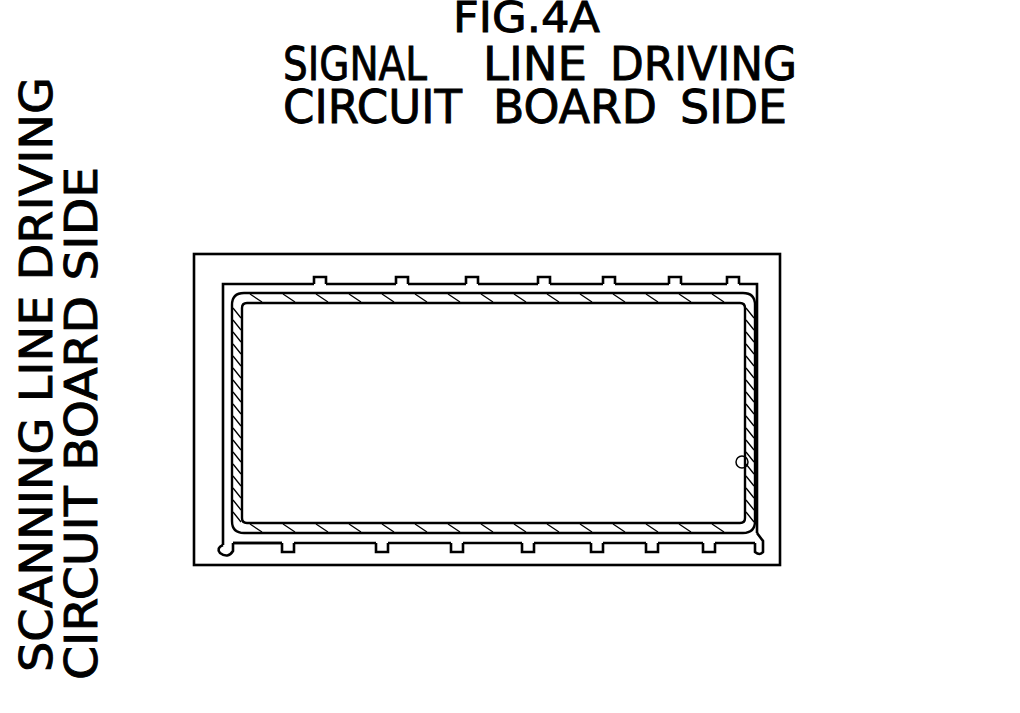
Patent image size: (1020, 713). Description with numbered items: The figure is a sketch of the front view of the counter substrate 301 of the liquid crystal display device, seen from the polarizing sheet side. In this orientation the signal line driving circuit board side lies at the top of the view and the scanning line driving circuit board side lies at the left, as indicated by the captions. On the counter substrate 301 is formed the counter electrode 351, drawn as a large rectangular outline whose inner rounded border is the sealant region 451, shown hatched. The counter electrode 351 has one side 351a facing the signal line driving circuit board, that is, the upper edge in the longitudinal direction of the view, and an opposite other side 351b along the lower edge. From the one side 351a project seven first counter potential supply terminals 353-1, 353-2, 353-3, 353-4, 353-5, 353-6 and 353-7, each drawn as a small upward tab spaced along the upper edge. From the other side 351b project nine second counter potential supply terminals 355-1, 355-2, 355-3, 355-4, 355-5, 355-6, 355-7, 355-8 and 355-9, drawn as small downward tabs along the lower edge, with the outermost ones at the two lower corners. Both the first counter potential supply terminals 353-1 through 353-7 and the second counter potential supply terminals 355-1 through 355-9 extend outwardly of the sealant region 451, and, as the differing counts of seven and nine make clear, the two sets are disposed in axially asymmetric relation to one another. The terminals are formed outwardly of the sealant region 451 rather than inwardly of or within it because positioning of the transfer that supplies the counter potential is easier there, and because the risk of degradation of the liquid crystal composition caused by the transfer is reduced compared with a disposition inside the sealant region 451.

The counter substrate 301 is at (884, 257).
The counter electrode 351 is at (732, 381).
The sealant region 451 is at (748, 466).
The one side 351a is at (260, 284).
The other side 351b is at (262, 548).
The first counter potential supply terminal 353-1 is at (327, 277).
The first counter potential supply terminal 353-2 is at (412, 277).
The first counter potential supply terminal 353-3 is at (479, 277).
The first counter potential supply terminal 353-4 is at (550, 277).
The first counter potential supply terminal 353-5 is at (615, 277).
The first counter potential supply terminal 353-6 is at (680, 277).
The first counter potential supply terminal 353-7 is at (738, 277).
The second counter potential supply terminal 355-1 is at (218, 560).
The second counter potential supply terminal 355-2 is at (288, 553).
The second counter potential supply terminal 355-3 is at (382, 553).
The second counter potential supply terminal 355-4 is at (455, 553).
The second counter potential supply terminal 355-5 is at (528, 553).
The second counter potential supply terminal 355-6 is at (595, 553).
The second counter potential supply terminal 355-7 is at (652, 553).
The second counter potential supply terminal 355-8 is at (708, 553).
The second counter potential supply terminal 355-9 is at (766, 556).